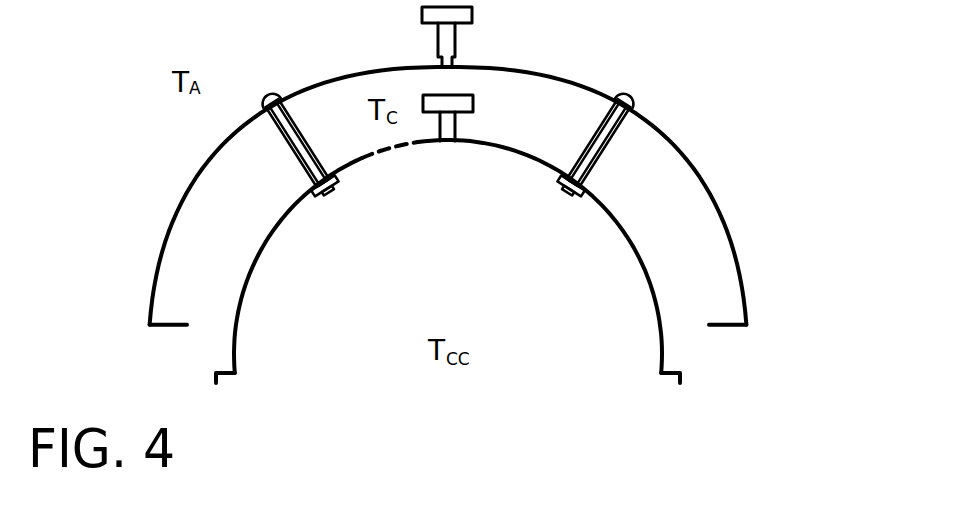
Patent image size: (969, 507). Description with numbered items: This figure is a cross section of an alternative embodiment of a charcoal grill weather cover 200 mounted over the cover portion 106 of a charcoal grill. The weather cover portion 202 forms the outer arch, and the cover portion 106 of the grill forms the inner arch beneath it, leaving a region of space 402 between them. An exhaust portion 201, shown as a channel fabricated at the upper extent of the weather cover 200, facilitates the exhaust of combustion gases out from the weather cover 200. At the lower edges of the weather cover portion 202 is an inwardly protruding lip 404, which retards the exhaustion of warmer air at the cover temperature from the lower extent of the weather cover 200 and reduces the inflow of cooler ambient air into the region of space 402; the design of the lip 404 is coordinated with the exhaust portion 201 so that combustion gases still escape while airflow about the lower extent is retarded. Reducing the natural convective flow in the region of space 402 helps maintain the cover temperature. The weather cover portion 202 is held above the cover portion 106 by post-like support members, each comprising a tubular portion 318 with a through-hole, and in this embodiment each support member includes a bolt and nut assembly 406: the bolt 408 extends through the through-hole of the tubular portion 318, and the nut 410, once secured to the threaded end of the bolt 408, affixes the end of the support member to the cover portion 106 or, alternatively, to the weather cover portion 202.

The cover portion 106 is at (246, 300).
The charcoal grill weather cover 200 is at (700, 138).
The exhaust portion 201 is at (405, 48).
The weather cover portion 202 is at (180, 212).
The tubular portion 318 is at (292, 149).
The region of space 402 is at (695, 220).
The lip 404 is at (160, 328).
The bolt and nut assembly 406 is at (290, 70).
The bolt 408 is at (270, 93).
The nut 410 is at (333, 198).